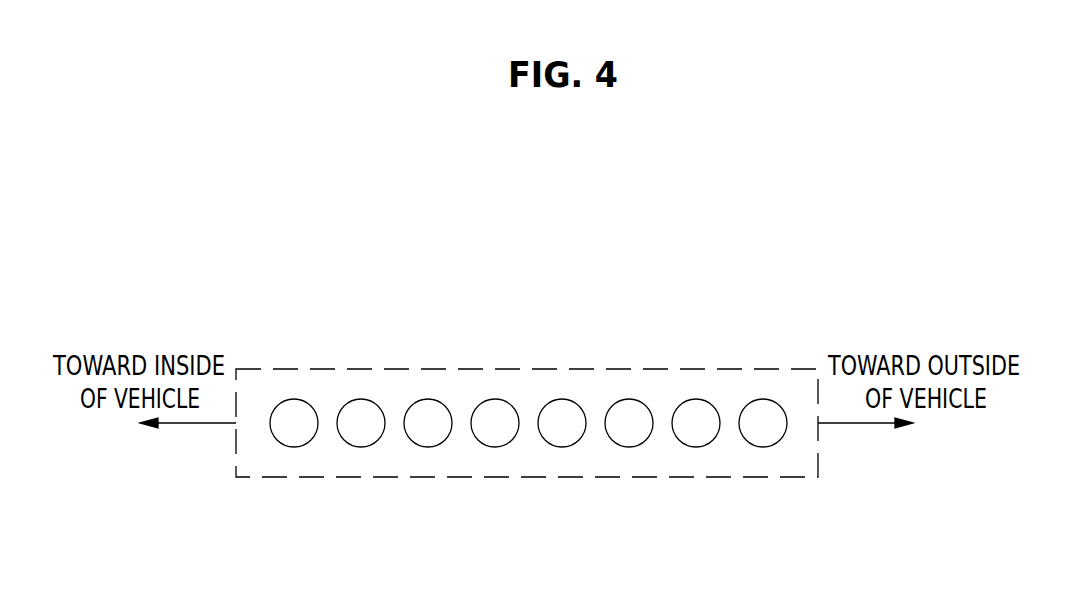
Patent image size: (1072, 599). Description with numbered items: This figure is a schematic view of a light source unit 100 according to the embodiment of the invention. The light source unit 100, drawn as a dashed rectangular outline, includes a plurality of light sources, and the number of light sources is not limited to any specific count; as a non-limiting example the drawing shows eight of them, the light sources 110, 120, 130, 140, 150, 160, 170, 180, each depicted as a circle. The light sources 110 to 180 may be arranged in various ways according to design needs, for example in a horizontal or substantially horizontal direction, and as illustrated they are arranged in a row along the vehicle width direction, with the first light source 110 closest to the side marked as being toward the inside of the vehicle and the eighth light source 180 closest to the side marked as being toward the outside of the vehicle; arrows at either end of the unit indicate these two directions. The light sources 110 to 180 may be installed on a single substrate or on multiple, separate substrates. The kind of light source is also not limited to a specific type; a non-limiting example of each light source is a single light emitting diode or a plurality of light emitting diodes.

The light source unit 100 is at (528, 477).
The light source 110 is at (294, 415).
The light source 120 is at (361, 415).
The light source 130 is at (428, 415).
The light source 140 is at (495, 415).
The light source 150 is at (563, 415).
The light source 160 is at (630, 415).
The light source 170 is at (697, 415).
The light source 180 is at (764, 415).